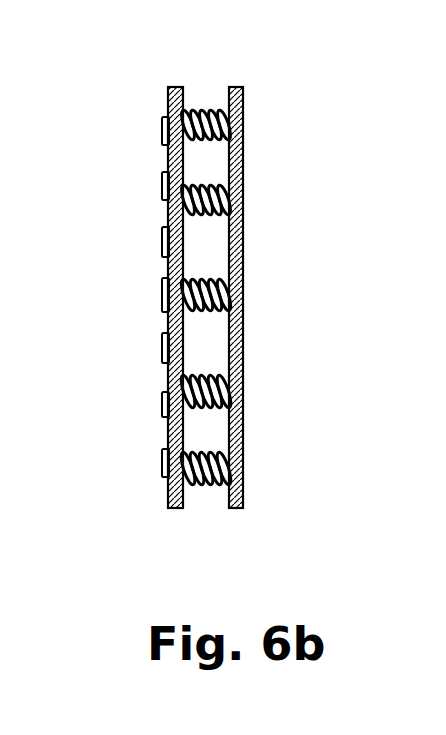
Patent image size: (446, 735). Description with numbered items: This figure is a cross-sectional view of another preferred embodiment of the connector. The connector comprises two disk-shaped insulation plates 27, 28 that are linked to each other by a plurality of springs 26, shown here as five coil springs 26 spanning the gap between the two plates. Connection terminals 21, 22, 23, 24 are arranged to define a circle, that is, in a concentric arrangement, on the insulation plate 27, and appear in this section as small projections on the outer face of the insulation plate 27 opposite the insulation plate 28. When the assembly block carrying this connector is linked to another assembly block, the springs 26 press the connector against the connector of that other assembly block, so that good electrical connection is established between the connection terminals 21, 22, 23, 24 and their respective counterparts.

The connection terminal 21 is at (163, 292).
The connection terminal 22 is at (163, 238).
The connection terminal 23 is at (163, 183).
The connection terminal 24 is at (163, 128).
The spring 26 is at (208, 104).
The insulation plate 27 is at (175, 512).
The insulation plate 28 is at (235, 512).